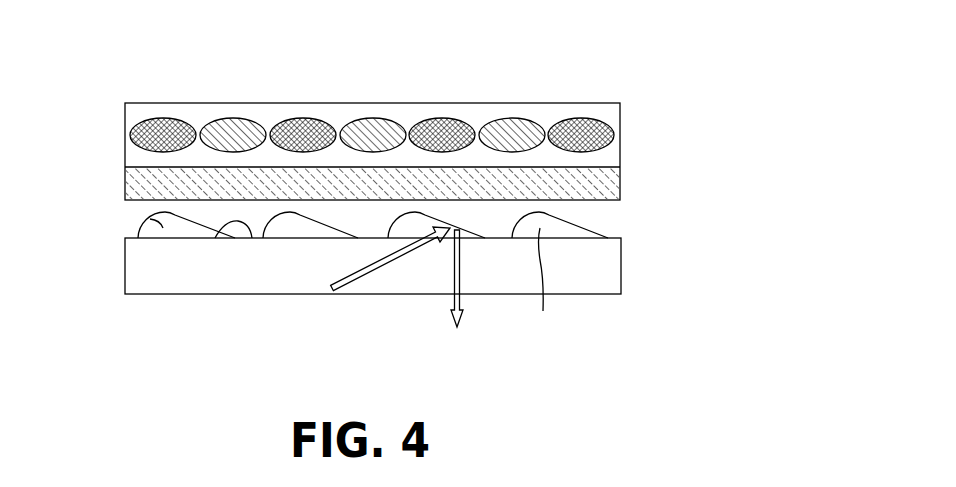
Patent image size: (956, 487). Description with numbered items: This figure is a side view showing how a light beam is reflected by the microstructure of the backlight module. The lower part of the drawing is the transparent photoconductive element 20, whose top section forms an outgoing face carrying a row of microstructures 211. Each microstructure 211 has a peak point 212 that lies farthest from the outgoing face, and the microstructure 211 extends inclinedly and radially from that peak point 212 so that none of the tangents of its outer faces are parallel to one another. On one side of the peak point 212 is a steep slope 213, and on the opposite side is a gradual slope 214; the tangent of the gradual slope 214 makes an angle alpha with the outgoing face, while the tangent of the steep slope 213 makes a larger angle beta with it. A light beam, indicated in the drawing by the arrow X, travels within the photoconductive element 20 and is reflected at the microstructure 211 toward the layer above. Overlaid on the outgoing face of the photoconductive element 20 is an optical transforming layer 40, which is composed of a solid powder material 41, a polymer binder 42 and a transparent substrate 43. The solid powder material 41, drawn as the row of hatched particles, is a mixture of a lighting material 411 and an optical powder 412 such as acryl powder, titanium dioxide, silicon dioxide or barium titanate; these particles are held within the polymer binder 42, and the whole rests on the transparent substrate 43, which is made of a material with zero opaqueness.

The photoconductive element 20 is at (377, 265).
The microstructure 211 is at (138, 226).
The peak point 212 is at (152, 212).
The steep slope 213 is at (137, 232).
The gradual slope 214 is at (252, 238).
The optical transforming layer 40 is at (440, 109).
The solid powder material 41 is at (400, 80).
The lighting material 411 is at (517, 135).
The optical powder 412 is at (605, 103).
The polymer binder 42 is at (413, 87).
The transparent substrate 43 is at (620, 176).
The light propagation direction X is at (392, 262).